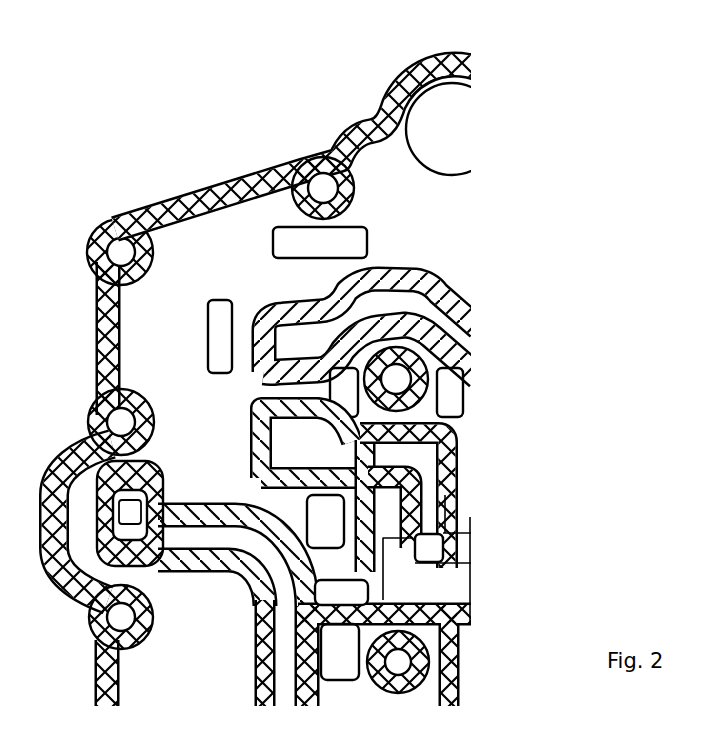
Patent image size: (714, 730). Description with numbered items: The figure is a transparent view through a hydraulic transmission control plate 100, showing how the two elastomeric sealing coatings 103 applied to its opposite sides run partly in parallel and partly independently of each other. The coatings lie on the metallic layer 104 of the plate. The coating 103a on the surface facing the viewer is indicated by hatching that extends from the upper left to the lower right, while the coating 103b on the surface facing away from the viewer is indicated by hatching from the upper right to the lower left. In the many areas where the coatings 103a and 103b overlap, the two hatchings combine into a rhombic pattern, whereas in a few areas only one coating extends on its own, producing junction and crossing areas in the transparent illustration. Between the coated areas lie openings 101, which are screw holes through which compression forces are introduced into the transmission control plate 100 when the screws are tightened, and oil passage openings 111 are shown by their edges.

The transmission control plate 100 is at (306, 362).
The openings 101 is at (122, 262).
The sealing coatings 103 is at (350, 127).
The coating on the surface pointing towards the spectator 103a is at (440, 287).
The coating on the surface pointing away from the spectator 103b is at (370, 575).
The metallic layer 104 is at (420, 222).
The oil passage openings 111 is at (402, 380).